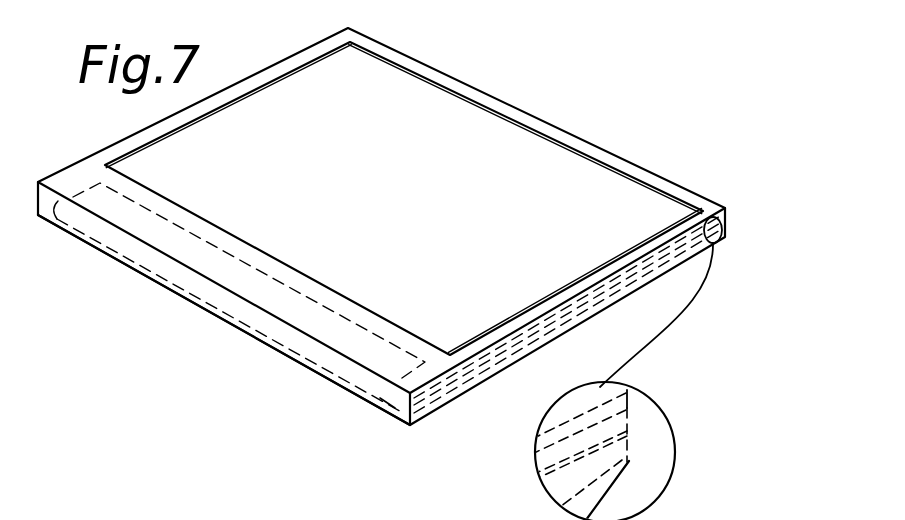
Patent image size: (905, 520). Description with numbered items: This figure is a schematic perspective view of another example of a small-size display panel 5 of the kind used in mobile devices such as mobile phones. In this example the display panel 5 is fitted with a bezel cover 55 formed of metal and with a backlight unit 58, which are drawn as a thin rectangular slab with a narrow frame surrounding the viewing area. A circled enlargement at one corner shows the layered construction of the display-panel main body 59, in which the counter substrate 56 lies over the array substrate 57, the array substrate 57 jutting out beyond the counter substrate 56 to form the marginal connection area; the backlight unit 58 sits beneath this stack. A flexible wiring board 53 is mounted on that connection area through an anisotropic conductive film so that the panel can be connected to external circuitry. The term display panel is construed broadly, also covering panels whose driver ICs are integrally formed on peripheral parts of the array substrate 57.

The display panel 5 is at (765, 166).
The flexible wiring board 53 is at (270, 339).
The bezel cover 55 is at (37, 214).
The counter substrate 56 is at (624, 393).
The array substrate 57 is at (615, 421).
The backlight unit 58 is at (666, 490).
The display-panel main body 59 is at (672, 440).